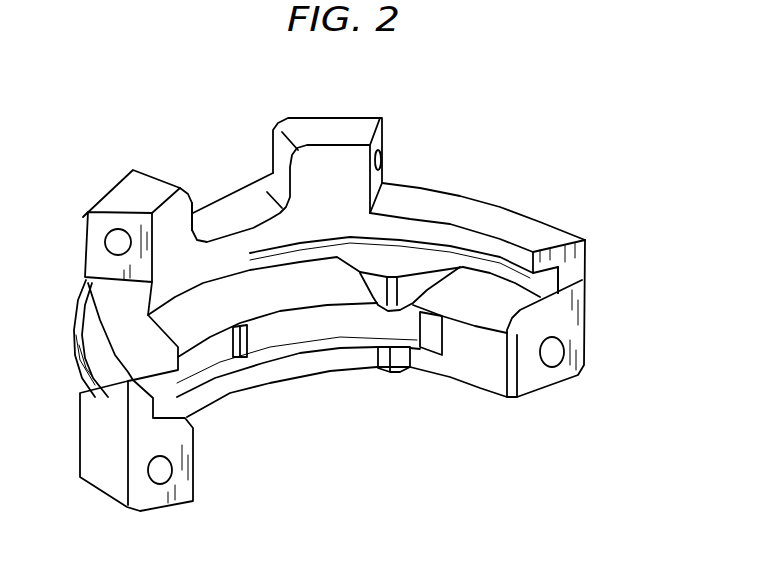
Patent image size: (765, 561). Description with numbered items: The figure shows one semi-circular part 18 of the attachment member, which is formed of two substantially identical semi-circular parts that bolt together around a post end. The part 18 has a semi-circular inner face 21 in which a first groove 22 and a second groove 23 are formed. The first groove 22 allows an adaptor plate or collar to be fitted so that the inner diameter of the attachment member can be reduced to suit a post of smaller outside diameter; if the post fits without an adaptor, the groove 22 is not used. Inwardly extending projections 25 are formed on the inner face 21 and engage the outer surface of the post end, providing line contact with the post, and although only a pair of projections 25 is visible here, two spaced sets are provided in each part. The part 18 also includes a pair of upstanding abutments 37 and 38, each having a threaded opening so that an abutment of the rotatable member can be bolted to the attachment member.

The semi-circular part 18 is at (533, 185).
The semi-circular inner face 21 is at (207, 390).
The first groove 22 is at (300, 330).
The second groove 23 is at (557, 280).
The inwardly extending projections 25 is at (390, 291).
The upstanding abutment 37 is at (337, 127).
The upstanding abutment 38 is at (123, 188).